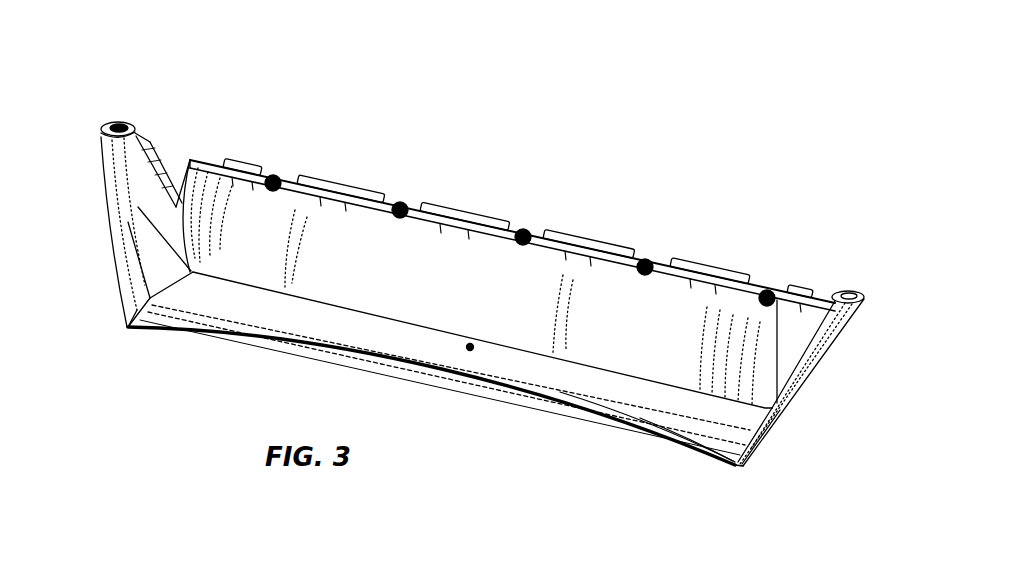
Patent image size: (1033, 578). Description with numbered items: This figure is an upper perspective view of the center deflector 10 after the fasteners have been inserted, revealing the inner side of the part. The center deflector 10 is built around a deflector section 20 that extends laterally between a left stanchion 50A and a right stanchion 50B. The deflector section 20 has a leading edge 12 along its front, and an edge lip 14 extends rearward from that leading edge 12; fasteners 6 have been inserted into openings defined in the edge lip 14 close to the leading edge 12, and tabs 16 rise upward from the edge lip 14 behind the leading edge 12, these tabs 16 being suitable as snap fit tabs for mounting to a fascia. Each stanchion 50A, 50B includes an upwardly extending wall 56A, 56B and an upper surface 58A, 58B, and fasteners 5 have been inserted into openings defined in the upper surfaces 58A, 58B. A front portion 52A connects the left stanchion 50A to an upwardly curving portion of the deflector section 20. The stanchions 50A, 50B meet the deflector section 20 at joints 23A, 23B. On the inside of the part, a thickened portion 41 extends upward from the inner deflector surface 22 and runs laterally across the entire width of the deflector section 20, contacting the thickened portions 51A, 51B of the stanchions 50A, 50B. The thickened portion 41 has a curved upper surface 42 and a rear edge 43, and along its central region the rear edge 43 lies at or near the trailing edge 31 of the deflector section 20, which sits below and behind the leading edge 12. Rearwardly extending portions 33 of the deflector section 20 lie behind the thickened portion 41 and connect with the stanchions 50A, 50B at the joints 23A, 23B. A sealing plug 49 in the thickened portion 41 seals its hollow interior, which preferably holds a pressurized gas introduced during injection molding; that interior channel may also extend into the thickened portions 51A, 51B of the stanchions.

The center deflector 10 is at (690, 178).
The fasteners 5 is at (122, 124).
The left stanchion 50A is at (114, 100).
The upper surface of left stanchion 58A is at (106, 126).
The upwardly extending wall of left stanchion 56A is at (152, 192).
The front portion of left stanchion 52A is at (175, 205).
The thickened portion of left stanchion 51A is at (150, 252).
The left joint 23A is at (137, 318).
The edge lip 14 is at (288, 185).
The fasteners 6 is at (400, 207).
The tabs 16 is at (487, 218).
The leading edge 12 is at (535, 233).
The deflector section 20 is at (360, 283).
The inner deflector surface 22 is at (420, 285).
The rear edge of thickened portion 43 is at (453, 373).
The sealing plug 49 is at (470, 347).
The thickened portion of deflector section 41 is at (545, 377).
The curved upper surface 42 is at (613, 392).
The trailing edge 31 is at (655, 433).
The rearwardly extending portions 33 is at (710, 447).
The right joint 23B is at (736, 468).
The upwardly extending wall of right stanchion 56B is at (783, 407).
The thickened portion of right stanchion 51B is at (777, 300).
The upper surface of right stanchion 58B is at (833, 296).
The right stanchion 50B is at (850, 266).